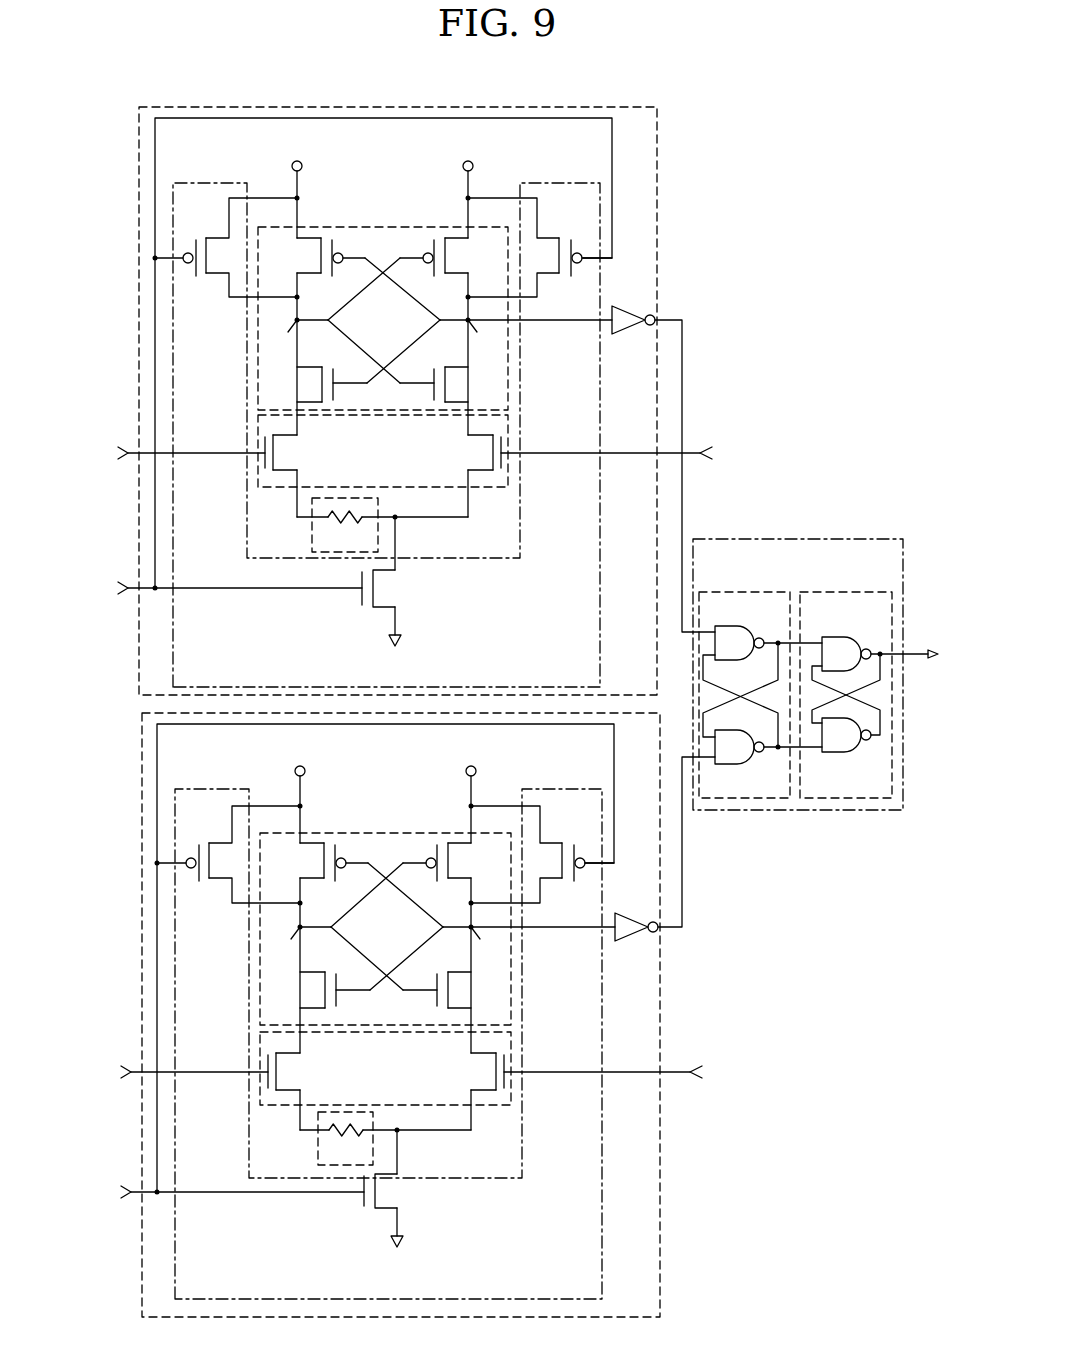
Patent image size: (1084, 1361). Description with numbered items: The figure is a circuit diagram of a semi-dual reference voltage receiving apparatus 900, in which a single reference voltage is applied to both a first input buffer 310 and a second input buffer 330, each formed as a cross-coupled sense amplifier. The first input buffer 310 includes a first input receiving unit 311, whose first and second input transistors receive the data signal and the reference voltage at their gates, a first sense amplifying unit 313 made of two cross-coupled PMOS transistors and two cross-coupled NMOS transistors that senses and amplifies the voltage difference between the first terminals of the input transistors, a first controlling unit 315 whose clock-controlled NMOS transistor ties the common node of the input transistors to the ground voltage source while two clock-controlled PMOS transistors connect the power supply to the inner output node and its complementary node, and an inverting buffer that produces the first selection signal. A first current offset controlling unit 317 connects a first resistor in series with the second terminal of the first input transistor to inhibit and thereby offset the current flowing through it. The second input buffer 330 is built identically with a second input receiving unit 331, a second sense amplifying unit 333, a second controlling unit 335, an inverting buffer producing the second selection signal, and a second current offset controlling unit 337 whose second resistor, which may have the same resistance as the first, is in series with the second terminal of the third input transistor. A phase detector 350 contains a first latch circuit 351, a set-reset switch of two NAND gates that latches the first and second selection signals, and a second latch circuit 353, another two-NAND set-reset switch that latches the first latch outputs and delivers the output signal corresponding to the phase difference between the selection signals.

The semi-dual reference voltage receiving apparatus 900 is at (722, 84).
The first input buffer 310 is at (139, 176).
The first sense amplifying unit 313 is at (387, 226).
The first input receiving unit 311 is at (492, 489).
The first current offset controlling unit 317 is at (348, 497).
The first controlling unit 315 is at (603, 622).
The second input buffer 330 is at (142, 787).
The second sense amplifying unit 333 is at (388, 832).
The second input receiving unit 331 is at (492, 1108).
The second current offset controlling unit 337 is at (349, 1111).
The second controlling unit 335 is at (603, 1227).
The phase detector 350 is at (823, 538).
The first latch circuit 351 is at (760, 591).
The second latch circuit 353 is at (852, 591).